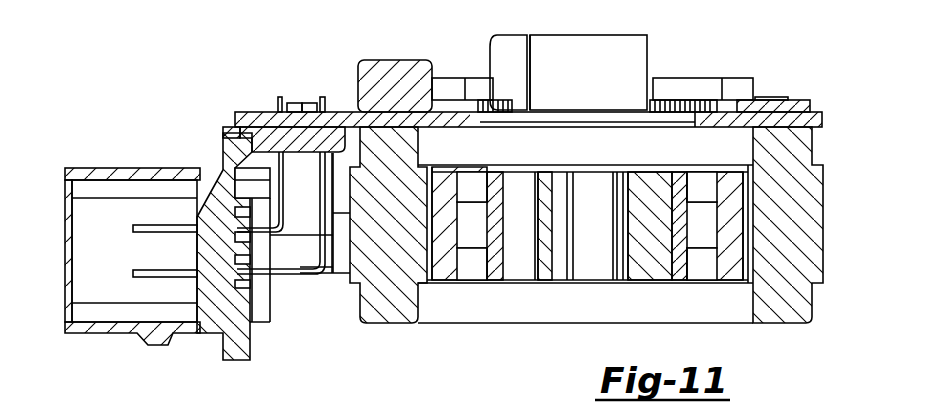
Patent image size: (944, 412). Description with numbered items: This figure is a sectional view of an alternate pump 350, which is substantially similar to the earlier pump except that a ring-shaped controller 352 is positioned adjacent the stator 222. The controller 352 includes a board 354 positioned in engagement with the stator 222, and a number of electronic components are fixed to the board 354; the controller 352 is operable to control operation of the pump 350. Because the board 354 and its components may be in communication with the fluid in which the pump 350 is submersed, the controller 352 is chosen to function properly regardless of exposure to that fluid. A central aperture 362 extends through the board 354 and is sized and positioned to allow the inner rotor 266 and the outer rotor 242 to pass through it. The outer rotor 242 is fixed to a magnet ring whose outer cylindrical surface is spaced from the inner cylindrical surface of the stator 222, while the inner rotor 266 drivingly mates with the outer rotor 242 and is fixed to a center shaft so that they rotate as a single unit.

The pump 350 is at (288, 52).
The board 354 is at (252, 118).
The central aperture 362 is at (482, 113).
The ring-shaped controller 352 is at (794, 82).
The stator 222 is at (802, 149).
The outer rotor 242 is at (495, 277).
The inner rotor 266 is at (542, 268).